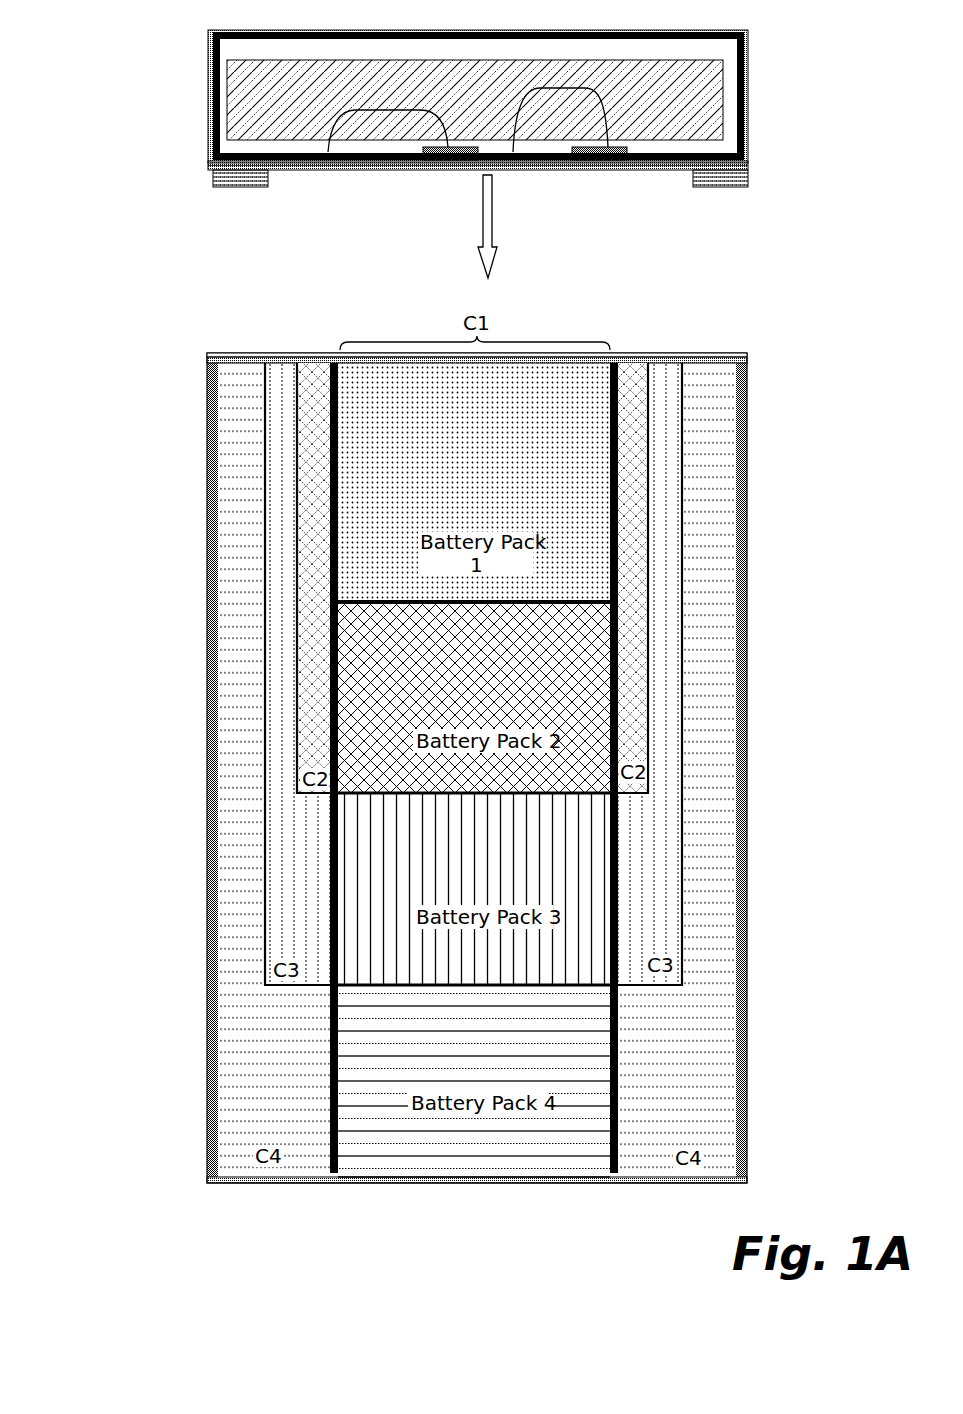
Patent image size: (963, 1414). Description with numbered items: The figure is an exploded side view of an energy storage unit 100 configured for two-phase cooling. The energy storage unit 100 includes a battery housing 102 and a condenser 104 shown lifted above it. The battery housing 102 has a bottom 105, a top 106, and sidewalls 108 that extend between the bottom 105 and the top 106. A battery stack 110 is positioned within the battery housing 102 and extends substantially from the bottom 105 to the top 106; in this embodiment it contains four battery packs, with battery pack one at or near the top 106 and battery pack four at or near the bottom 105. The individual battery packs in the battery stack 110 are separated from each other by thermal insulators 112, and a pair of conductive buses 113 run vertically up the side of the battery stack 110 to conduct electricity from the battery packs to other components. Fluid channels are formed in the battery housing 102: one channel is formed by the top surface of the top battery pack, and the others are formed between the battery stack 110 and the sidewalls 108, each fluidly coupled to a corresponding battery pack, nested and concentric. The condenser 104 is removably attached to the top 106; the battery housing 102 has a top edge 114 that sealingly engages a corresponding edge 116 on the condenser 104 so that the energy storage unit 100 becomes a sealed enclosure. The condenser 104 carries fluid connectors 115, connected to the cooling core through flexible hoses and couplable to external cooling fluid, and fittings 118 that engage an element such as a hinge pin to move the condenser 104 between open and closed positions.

The energy storage unit 100 is at (137, 66).
The battery housing 102 is at (752, 385).
The condenser 104 is at (748, 68).
The bottom 105 is at (233, 1183).
The top 106 is at (222, 362).
The sidewalls 108 is at (207, 550).
The battery stack 110 is at (610, 1187).
The thermal insulators 112 is at (477, 604).
The conductive buses 113 is at (330, 852).
The top edge 114 is at (666, 362).
The fluid connectors 115 is at (440, 160).
The edge 116 is at (308, 172).
The fittings 118 is at (234, 188).